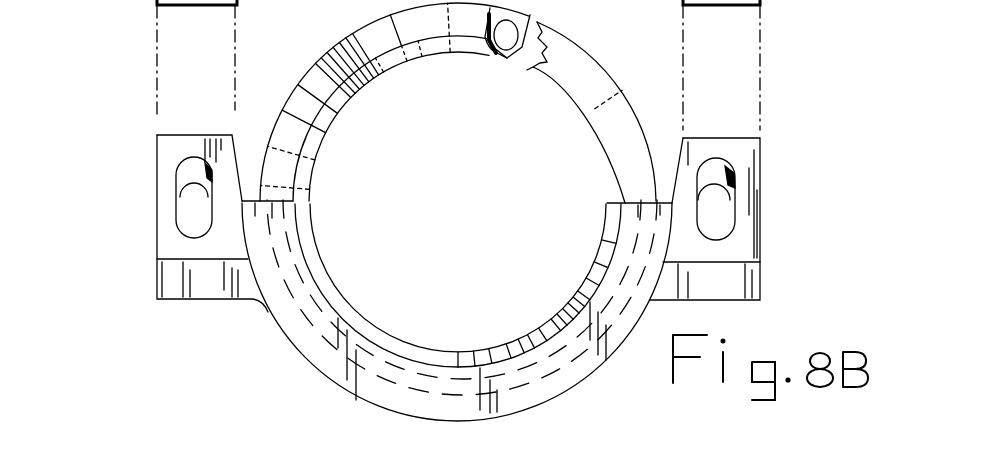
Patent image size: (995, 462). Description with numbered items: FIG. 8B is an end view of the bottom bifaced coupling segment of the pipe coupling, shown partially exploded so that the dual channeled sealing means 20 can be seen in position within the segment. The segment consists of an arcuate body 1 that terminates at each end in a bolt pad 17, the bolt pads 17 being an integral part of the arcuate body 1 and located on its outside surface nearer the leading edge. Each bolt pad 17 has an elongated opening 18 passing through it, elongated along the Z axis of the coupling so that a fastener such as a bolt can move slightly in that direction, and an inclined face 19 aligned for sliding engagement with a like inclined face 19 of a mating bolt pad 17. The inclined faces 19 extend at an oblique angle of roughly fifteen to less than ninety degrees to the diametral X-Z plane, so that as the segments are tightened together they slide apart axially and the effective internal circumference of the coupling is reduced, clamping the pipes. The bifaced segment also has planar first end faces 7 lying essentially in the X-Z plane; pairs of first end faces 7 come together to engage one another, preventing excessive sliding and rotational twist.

The arcuate body 1 is at (303, 392).
The first end face 7 is at (247, 200).
The bolt pad 17 is at (150, 5).
The elongated opening 18 is at (193, 197).
The inclined face 19 is at (166, 230).
The dual channeled sealing means 20 is at (318, 62).